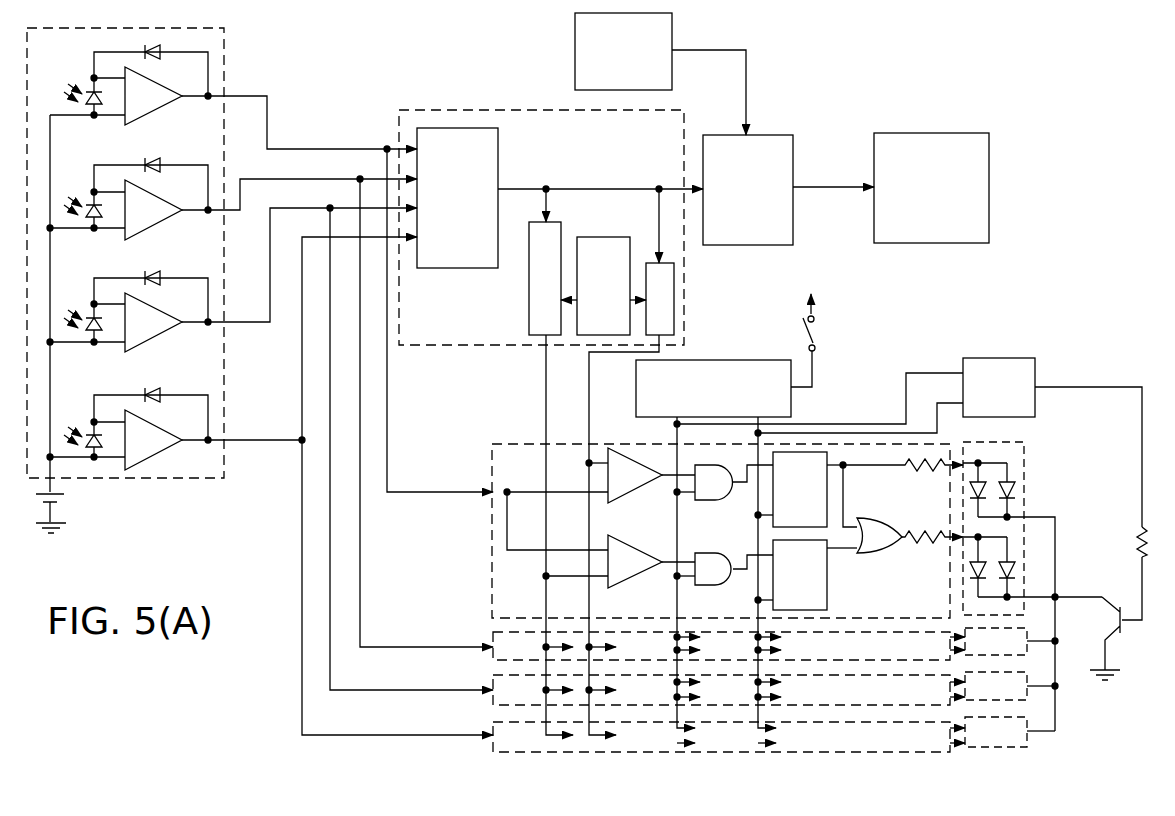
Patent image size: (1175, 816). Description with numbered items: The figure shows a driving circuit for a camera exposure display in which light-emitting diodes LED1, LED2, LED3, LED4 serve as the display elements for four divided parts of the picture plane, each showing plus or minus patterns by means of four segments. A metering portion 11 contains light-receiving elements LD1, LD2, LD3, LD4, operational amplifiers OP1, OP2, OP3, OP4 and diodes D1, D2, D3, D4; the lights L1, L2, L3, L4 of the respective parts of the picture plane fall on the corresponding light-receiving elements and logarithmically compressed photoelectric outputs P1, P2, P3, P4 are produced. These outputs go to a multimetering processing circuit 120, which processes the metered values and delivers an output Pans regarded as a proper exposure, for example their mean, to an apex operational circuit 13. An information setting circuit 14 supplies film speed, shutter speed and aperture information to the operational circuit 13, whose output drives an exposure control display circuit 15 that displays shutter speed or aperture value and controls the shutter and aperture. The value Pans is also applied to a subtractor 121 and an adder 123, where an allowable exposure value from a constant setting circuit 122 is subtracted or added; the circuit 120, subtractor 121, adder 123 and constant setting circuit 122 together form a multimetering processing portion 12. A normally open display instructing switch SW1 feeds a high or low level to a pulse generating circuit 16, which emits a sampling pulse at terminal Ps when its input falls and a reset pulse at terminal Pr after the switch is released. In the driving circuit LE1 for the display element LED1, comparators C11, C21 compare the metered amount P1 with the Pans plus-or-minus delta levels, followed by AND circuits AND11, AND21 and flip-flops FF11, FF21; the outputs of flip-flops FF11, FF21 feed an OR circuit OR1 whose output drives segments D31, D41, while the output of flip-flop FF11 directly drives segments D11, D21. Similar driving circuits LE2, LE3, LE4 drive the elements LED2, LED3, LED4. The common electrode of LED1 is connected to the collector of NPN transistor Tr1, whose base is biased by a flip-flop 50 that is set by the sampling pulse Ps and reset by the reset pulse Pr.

The metering portion 11 is at (224, 62).
The multimetering processing portion 12 is at (520, 108).
The multimetering processing circuit 120 is at (498, 158).
The subtractor 121 is at (529, 300).
The constant setting circuit 122 is at (594, 237).
The adder 123 is at (674, 296).
The apex operational circuit 13 is at (788, 135).
The information setting circuit 14 is at (575, 34).
The exposure control display circuit 15 is at (968, 133).
The pulse generating circuit 16 is at (730, 360).
The flip-flop 50 is at (1003, 358).
The light L1 is at (67, 82).
The light L2 is at (67, 195).
The light L3 is at (67, 308).
The light L4 is at (67, 425).
The light-receiving element LD1 is at (104, 106).
The light-receiving element LD2 is at (104, 219).
The light-receiving element LD3 is at (104, 332).
The light-receiving element LD4 is at (106, 450).
The operational amplifier OP1 is at (160, 108).
The operational amplifier OP2 is at (160, 222).
The operational amplifier OP3 is at (160, 334).
The operational amplifier OP4 is at (160, 452).
The diode D1 is at (156, 58).
The diode D2 is at (156, 171).
The diode D3 is at (156, 284).
The diode D4 is at (156, 401).
The photoelectric output P1 is at (355, 142).
The photoelectric output P2 is at (303, 178).
The photoelectric output P3 is at (281, 207).
The photoelectric output P4 is at (296, 252).
The display instructing switch SW1 is at (816, 334).
The sampling pulse terminal Ps is at (818, 558).
The reset pulse terminal Pr is at (859, 573).
The NPN transistor Tr1 is at (1112, 636).
The driving circuit LE1 is at (515, 442).
The driving circuit LE2 is at (493, 636).
The driving circuit LE3 is at (493, 679).
The driving circuit LE4 is at (493, 726).
The comparator C11 is at (642, 490).
The comparator C21 is at (642, 577).
The AND circuit AND11 is at (720, 500).
The AND circuit AND21 is at (720, 585).
The flip-flop FF11 is at (808, 489).
The flip-flop FF21 is at (815, 575).
The OR circuit OR1 is at (878, 553).
The light-emitting diode display element LED1 is at (1015, 442).
The light-emitting diode display element LED2 is at (1011, 641).
The light-emitting diode display element LED3 is at (1011, 686).
The light-emitting diode display element LED4 is at (1010, 732).
The segment D11 is at (970, 490).
The segment D21 is at (1015, 490).
The segment D31 is at (970, 570).
The segment D41 is at (1015, 570).